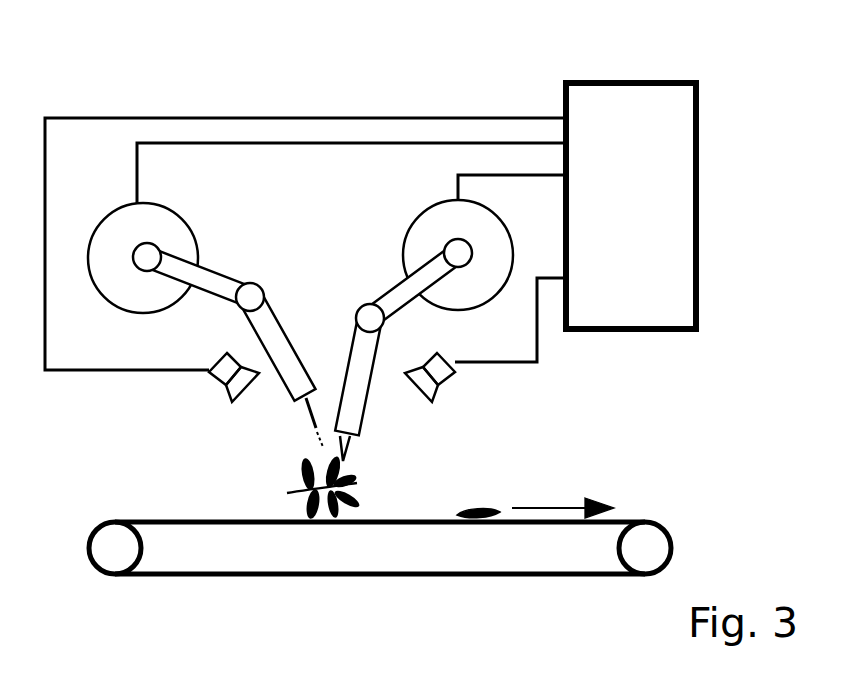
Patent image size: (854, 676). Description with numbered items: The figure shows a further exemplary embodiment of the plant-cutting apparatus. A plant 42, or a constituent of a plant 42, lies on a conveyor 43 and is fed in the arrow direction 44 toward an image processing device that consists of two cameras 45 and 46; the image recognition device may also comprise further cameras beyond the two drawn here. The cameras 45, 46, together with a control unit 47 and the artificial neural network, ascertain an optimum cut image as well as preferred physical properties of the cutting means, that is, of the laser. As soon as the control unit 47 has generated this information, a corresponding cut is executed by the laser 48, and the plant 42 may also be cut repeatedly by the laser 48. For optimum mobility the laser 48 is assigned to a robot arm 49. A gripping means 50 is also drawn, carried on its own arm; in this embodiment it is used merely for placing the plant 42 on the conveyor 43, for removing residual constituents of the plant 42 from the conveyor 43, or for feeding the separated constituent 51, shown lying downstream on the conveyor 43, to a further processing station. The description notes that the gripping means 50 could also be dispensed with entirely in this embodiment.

The plant 42 is at (300, 470).
The conveyor 43 is at (657, 522).
The arrow direction 44 is at (547, 505).
The camera 45 is at (216, 386).
The camera 46 is at (448, 385).
The control unit 47 is at (697, 153).
The laser 48 is at (284, 327).
The robot arm 49 is at (210, 270).
The gripping means 50 is at (383, 298).
The separated constituent 51 is at (487, 512).